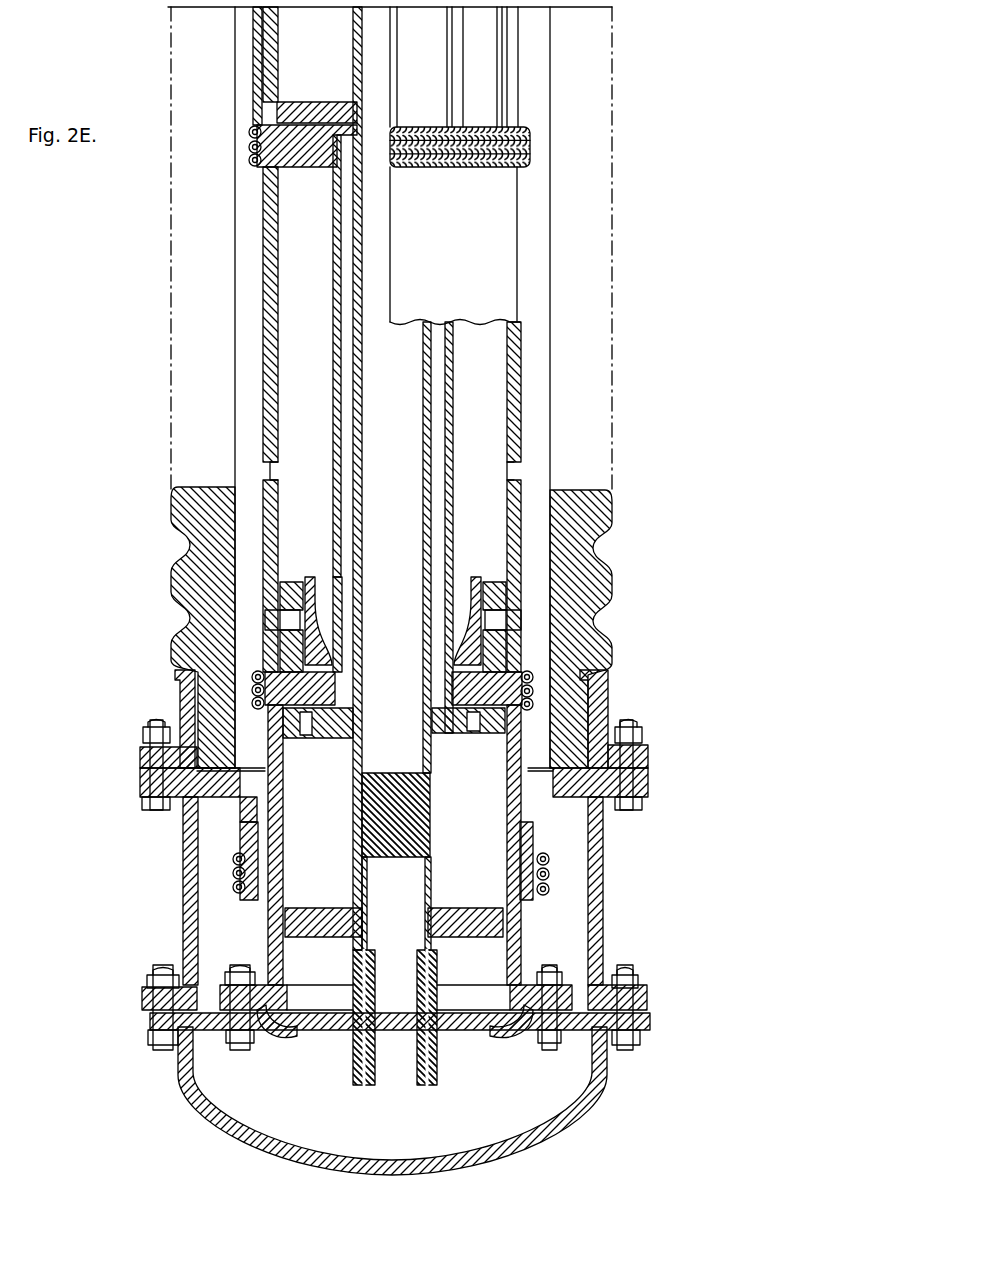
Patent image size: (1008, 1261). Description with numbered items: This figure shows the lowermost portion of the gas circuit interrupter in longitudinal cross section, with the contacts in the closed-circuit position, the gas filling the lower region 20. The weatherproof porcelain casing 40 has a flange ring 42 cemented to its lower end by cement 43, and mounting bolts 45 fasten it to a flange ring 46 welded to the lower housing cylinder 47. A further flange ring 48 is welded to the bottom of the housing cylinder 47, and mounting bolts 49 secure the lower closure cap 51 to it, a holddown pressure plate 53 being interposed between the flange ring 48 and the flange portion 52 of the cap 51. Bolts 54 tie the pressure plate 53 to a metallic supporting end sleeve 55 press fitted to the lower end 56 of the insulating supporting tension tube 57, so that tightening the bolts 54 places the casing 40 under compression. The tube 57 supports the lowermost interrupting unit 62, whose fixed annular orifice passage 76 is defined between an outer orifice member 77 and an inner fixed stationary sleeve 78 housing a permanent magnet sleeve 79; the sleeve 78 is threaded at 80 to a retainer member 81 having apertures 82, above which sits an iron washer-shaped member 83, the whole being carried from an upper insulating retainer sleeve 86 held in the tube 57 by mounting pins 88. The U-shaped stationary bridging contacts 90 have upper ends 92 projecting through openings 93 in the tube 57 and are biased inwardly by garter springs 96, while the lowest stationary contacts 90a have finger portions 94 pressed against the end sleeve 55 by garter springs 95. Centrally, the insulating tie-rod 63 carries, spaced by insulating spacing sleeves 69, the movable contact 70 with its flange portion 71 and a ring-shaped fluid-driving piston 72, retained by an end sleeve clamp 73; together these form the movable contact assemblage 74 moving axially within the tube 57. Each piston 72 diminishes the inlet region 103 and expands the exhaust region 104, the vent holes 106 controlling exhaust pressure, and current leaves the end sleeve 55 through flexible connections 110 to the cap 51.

The lower region 20 is at (261, 254).
The cylindrical casing 40 is at (612, 200).
The flange ring 42 is at (648, 753).
The cement 43 is at (590, 672).
The mounting bolts 45 is at (638, 810).
The flange ring 46 is at (648, 786).
The lower housing cylinder 47 is at (603, 890).
The flange ring 48 is at (647, 999).
The mounting bolts 49 is at (636, 1048).
The lower closure cap 51 is at (560, 1118).
The flange portion 52 is at (153, 1045).
The holddown pressure plate 53 is at (650, 1021).
The bolts 54 is at (550, 976).
The supporting end sleeve 55 is at (521, 914).
The lower end 56 is at (283, 961).
The insulating supporting tension tube 57 is at (507, 410).
The interrupting unit 62 is at (345, 89).
The insulating tie-rod 63 is at (408, 821).
The insulating spacing sleeve 69 is at (431, 820).
The movable contact 70 is at (453, 380).
The flange portion 71 is at (342, 172).
The fluid-driving piston 72 is at (301, 112).
The end sleeve clamp 73 is at (437, 977).
The movable contact assemblage 74 is at (397, 1070).
The annular orifice passage 76 is at (318, 582).
The outer orifice member 77 is at (313, 590).
The inner fixed stationary sleeve 78 is at (345, 590).
The permanent magnet sleeve 79 is at (362, 660).
The threaded end 80 is at (343, 734).
The retainer member 81 is at (299, 734).
The apertures 82 is at (308, 738).
The washer-shaped member 83 is at (182, 700).
The upper insulating retainer sleeve 86 is at (500, 678).
The mounting pins 88 is at (270, 622).
The stationary bridging contact 90 is at (258, 72).
The stationary contacts 90a is at (262, 810).
The upper end 92 is at (264, 674).
The opening 93 is at (533, 677).
The finger portions 94 is at (247, 900).
The garter springs 95 is at (233, 887).
The garter springs 96 is at (249, 160).
The inlet region 103 is at (330, 33).
The exhaust region 104 is at (322, 458).
The vent holes 106 is at (276, 472).
The flexible connections 110 is at (292, 1033).